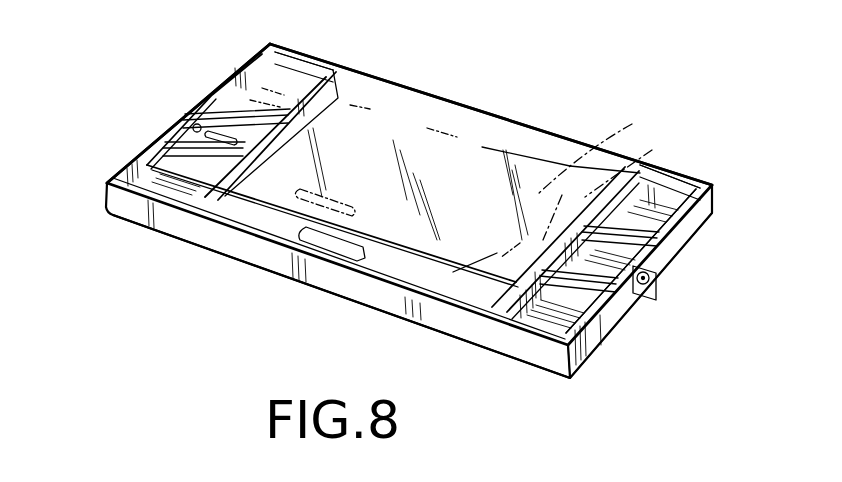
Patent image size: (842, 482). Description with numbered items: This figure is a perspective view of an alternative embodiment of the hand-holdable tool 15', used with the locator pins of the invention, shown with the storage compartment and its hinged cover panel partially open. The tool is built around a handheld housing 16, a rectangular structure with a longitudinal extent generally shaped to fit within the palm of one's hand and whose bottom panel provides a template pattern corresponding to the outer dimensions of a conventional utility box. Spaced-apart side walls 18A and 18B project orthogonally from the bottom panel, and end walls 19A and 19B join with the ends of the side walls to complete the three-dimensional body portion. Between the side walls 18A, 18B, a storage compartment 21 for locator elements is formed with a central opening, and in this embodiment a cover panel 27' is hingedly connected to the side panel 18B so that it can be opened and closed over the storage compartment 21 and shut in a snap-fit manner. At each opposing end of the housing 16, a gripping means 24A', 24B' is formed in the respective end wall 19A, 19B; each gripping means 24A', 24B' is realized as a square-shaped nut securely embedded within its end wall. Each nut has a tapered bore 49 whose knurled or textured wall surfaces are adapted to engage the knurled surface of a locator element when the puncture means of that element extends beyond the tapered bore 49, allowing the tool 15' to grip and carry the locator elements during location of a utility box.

The hand-holdable tool 15' is at (409, 211).
The housing 16 is at (272, 276).
The side wall 18A is at (213, 243).
The side wall 18B is at (642, 163).
The end wall 19A is at (590, 343).
The end wall 19B is at (124, 171).
The storage compartment 21 is at (442, 193).
The gripping means 24A' is at (634, 246).
The gripping means 24B' is at (245, 109).
The cover panel 27' is at (518, 180).
The tapered bore 49 is at (648, 284).